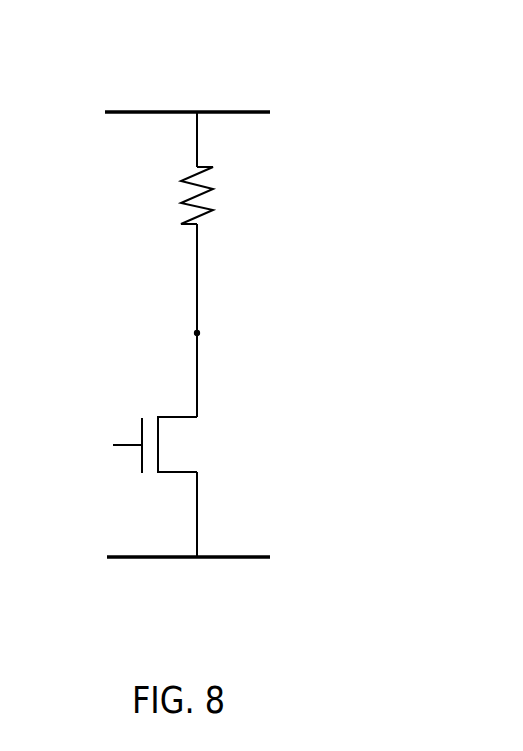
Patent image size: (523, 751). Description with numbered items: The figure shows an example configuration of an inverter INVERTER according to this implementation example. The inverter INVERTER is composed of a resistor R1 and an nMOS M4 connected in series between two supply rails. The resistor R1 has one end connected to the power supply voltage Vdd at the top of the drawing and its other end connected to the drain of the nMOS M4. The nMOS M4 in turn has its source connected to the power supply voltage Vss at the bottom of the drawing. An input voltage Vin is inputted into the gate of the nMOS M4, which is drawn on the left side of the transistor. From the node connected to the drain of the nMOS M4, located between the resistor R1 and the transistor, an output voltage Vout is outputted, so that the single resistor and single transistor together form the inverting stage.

The inverter INVERTER is at (299, 70).
The resistor R1 is at (214, 196).
The nMOS M4 is at (192, 445).
The power supply voltage Vdd is at (157, 114).
The power supply voltage Vss is at (160, 556).
The input voltage Vin is at (92, 451).
The output voltage Vout is at (197, 333).